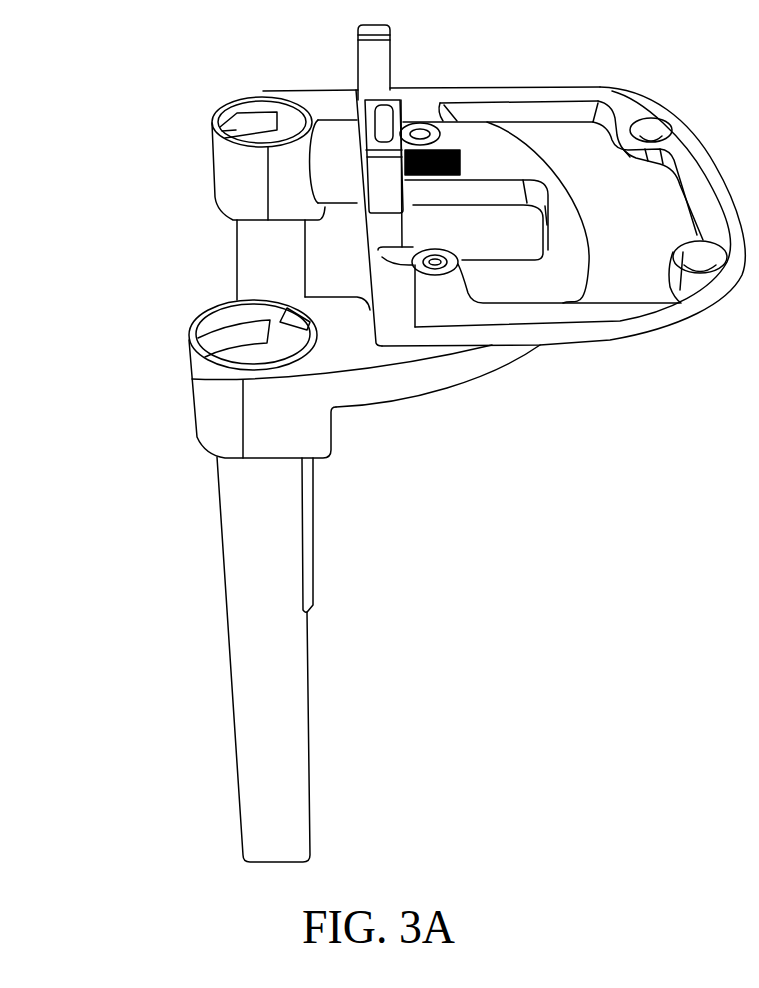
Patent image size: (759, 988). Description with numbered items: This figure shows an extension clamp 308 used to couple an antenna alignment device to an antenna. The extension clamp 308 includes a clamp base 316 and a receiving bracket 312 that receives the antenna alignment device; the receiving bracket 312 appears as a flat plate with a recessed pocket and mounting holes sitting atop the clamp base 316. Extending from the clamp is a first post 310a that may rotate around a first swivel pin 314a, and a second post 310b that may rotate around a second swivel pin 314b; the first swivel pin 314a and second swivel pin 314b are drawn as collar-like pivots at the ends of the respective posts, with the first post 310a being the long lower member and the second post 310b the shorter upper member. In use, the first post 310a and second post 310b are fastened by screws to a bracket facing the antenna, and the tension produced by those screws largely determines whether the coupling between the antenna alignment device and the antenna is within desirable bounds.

The extension clamp 308 is at (186, 492).
The first post 310a is at (298, 802).
The second post 310b is at (237, 252).
The receiving bracket 312 is at (642, 108).
The first swivel pin 314a is at (196, 350).
The second swivel pin 314b is at (215, 139).
The clamp base 316 is at (450, 378).